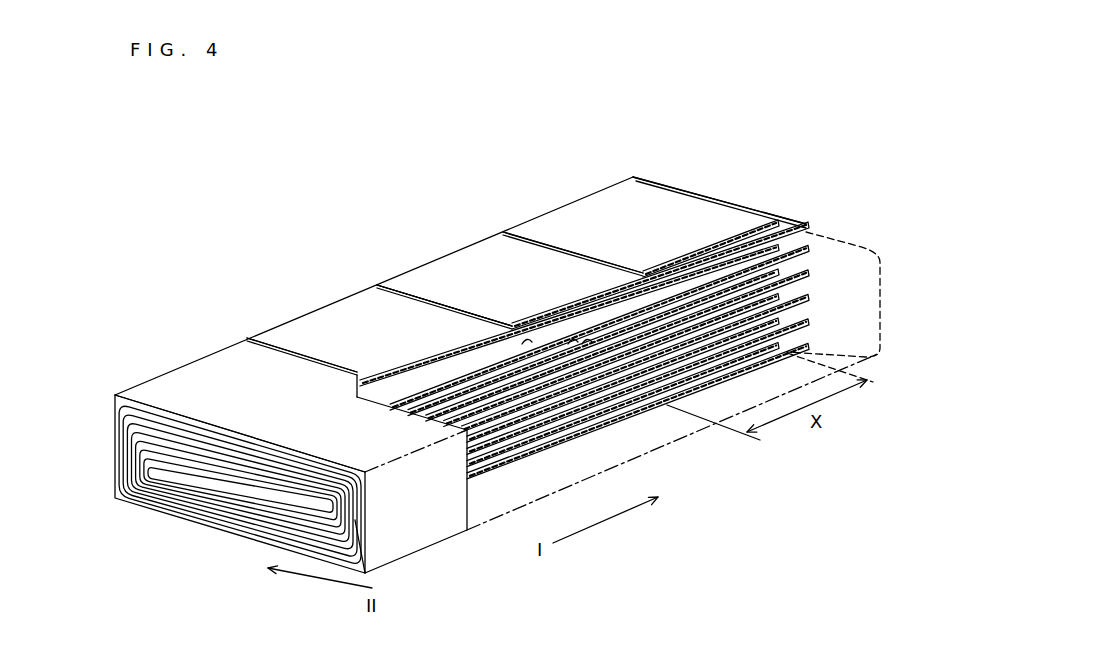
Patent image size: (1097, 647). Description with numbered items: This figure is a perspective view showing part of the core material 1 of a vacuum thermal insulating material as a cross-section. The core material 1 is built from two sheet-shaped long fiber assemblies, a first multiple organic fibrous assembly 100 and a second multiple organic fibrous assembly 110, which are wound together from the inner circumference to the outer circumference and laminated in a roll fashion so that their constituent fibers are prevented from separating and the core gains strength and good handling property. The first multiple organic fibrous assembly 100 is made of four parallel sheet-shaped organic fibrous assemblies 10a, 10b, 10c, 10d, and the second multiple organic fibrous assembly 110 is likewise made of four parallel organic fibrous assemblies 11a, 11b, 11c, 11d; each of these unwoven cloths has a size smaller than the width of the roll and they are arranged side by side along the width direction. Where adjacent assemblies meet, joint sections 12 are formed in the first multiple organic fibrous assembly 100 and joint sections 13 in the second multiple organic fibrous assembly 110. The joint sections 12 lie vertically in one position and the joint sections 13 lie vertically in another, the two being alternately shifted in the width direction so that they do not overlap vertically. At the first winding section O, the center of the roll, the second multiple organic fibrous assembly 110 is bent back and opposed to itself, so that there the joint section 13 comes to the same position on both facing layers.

The core material 1 is at (740, 181).
The first multiple organic fibrous assembly 100 is at (183, 363).
The second multiple organic fibrous assembly 110 is at (362, 535).
The first winding section O is at (233, 497).
The organic fibrous assembly 10a is at (237, 352).
The organic fibrous assembly 10b is at (363, 310).
The organic fibrous assembly 10c is at (480, 250).
The organic fibrous assembly 10d is at (643, 200).
The organic fibrous assembly 11a is at (352, 387).
The organic fibrous assembly 11b is at (467, 360).
The organic fibrous assembly 11c is at (597, 295).
The organic fibrous assembly 11d is at (794, 220).
The joint section 12 is at (417, 297).
The joint section 13 is at (527, 340).